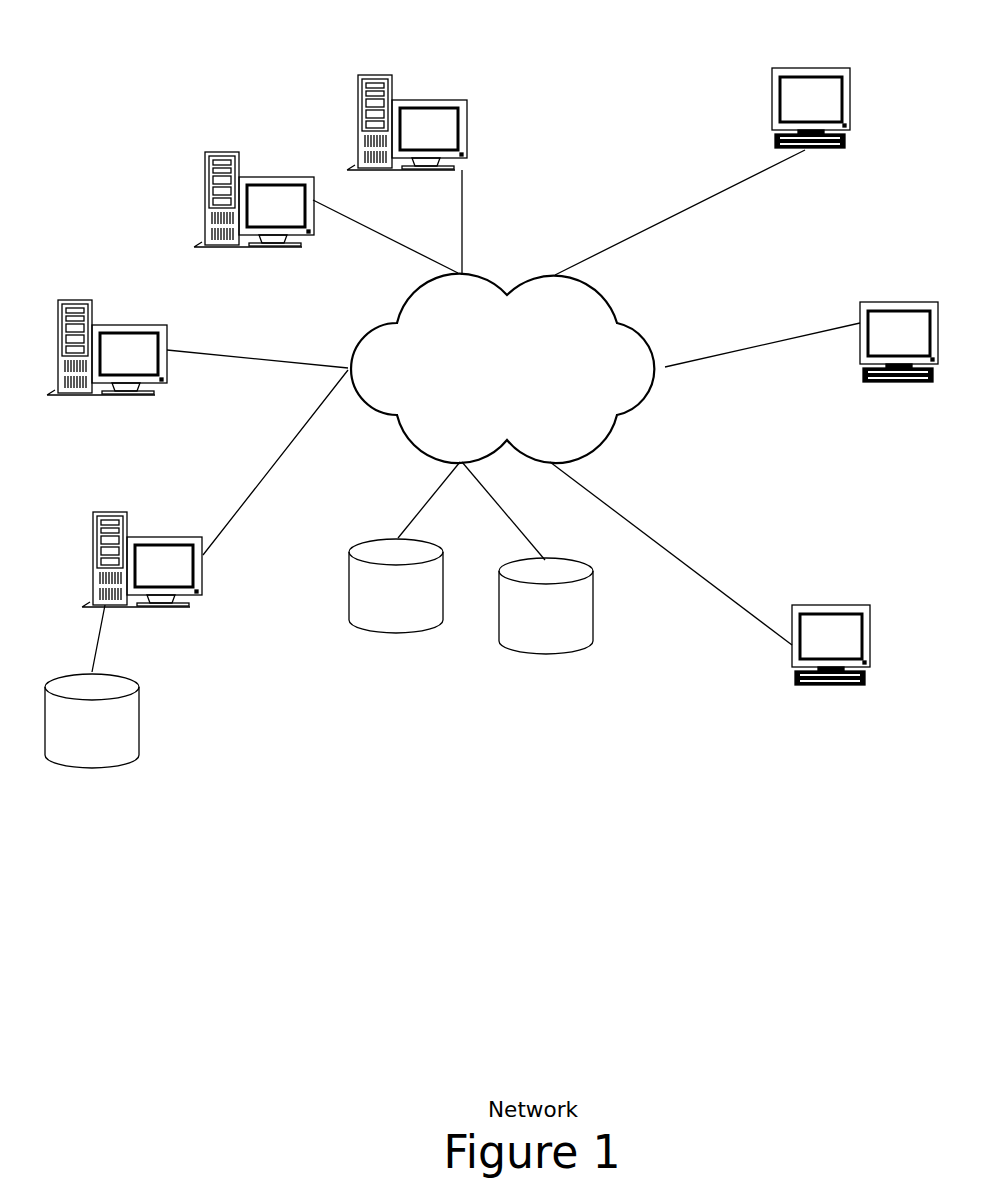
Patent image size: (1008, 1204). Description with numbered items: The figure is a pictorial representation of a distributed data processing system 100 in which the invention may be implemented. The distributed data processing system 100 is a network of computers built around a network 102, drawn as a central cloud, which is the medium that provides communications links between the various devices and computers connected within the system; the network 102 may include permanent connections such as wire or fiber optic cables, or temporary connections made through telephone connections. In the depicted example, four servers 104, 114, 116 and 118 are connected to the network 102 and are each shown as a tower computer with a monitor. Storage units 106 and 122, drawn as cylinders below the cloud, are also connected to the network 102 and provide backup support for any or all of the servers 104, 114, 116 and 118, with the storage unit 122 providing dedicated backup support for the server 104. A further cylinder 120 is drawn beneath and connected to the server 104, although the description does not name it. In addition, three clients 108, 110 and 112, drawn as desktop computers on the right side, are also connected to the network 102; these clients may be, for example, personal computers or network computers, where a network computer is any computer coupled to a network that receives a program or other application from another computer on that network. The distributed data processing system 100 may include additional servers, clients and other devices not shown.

The distributed data processing system 100 is at (491, 547).
The network 102 is at (487, 378).
The server 104 is at (187, 517).
The storage unit 106 is at (528, 622).
The client 108 is at (820, 54).
The client 110 is at (908, 285).
The client 112 is at (823, 594).
The server 114 is at (143, 312).
The server 116 is at (275, 152).
The server 118 is at (437, 77).
The database 120 is at (74, 738).
The storage unit 122 is at (378, 603).